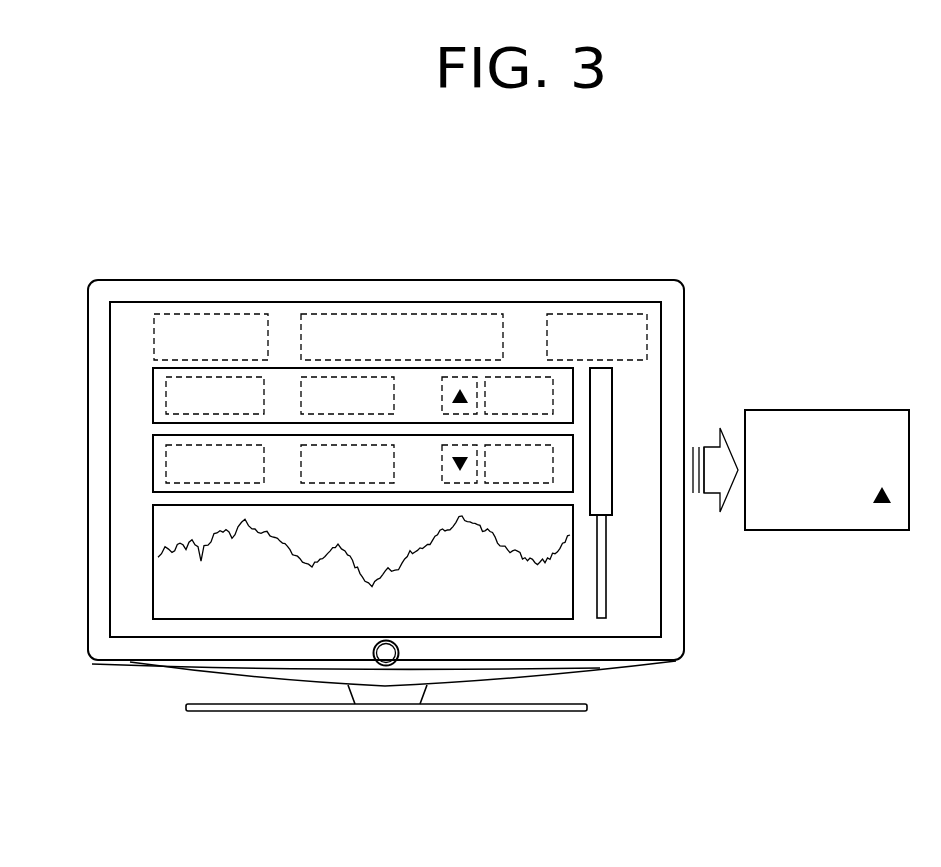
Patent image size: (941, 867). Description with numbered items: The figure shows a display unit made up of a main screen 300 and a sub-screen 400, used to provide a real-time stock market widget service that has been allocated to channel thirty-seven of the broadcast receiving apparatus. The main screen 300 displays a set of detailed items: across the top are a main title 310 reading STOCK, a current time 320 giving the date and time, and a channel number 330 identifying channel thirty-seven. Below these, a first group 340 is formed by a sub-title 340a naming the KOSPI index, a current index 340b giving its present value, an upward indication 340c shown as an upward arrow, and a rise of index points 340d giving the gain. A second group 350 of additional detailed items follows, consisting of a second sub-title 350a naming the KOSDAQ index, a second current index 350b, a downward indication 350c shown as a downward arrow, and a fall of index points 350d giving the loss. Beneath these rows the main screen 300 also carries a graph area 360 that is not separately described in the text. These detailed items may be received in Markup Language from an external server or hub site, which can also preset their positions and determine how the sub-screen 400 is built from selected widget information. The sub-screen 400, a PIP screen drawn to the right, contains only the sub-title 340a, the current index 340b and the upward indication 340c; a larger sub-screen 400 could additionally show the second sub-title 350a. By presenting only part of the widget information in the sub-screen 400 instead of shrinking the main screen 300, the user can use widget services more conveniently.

The main screen 300 is at (658, 302).
The main title 310 is at (215, 313).
The current time 320 is at (398, 313).
The channel number 330 is at (610, 313).
The first group 340 is at (345, 330).
The sub-title 340a is at (265, 377).
The current index 340b is at (302, 377).
The upward indication 340c is at (477, 377).
The rise of index points 340d is at (518, 377).
The second group 350 is at (347, 594).
The second sub-title 350a is at (215, 483).
The second current index 350b is at (328, 483).
The downward indication 350c is at (460, 483).
The fall of index points 350d is at (537, 483).
The stock trend graph area 360 is at (573, 619).
The sub-screen 400 is at (890, 410).